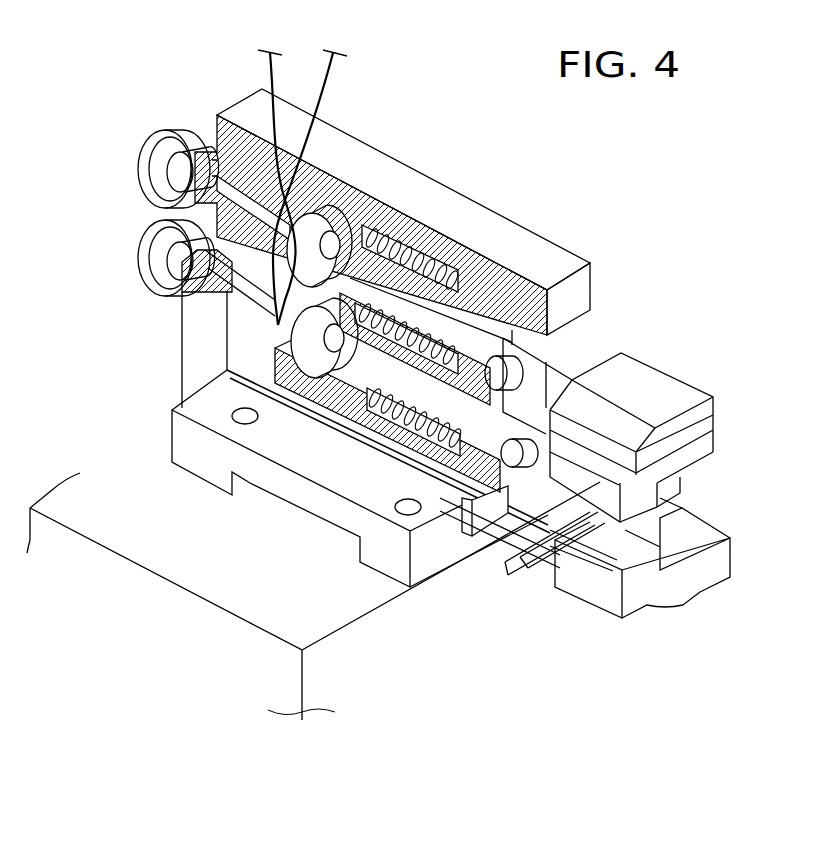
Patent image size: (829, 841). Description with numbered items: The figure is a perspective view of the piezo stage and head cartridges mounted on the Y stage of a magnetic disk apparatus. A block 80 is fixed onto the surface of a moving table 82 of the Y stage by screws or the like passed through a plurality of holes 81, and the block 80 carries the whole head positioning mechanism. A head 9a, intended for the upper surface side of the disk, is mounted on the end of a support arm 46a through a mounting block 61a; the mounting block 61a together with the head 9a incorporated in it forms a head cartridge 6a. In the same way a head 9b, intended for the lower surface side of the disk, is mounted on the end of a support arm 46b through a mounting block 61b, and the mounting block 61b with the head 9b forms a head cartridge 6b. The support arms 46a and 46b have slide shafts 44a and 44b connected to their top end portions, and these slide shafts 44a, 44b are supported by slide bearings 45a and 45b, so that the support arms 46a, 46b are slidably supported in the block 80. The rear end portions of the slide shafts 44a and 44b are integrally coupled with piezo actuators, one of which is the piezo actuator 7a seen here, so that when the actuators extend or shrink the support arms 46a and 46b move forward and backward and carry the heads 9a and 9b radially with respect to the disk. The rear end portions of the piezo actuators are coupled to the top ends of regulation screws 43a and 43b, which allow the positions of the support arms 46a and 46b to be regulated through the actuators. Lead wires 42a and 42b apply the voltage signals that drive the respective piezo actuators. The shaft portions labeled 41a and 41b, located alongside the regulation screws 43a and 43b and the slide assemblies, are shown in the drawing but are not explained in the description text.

The block 80 is at (658, 259).
The holes 81 is at (240, 413).
The moving table 82 is at (338, 625).
The upper shaft 41a is at (322, 224).
The lower shaft 41b is at (345, 290).
The lead wire 42a is at (328, 77).
The lead wire 42b is at (277, 75).
The regulation screw 43a is at (150, 155).
The regulation screw 43b is at (147, 247).
The slide shaft 44a is at (422, 290).
The slide shaft 44b is at (393, 447).
The slide bearing 45a is at (467, 297).
The slide bearing 45b is at (470, 365).
The support arm 46a is at (652, 360).
The support arm 46b is at (702, 585).
The mounting block 61a is at (717, 430).
The mounting block 61b is at (697, 533).
The head cartridge 6a is at (693, 475).
The head cartridge 6b is at (745, 550).
The piezo actuator 7a is at (507, 557).
The head 9a is at (530, 575).
The head 9b is at (513, 578).